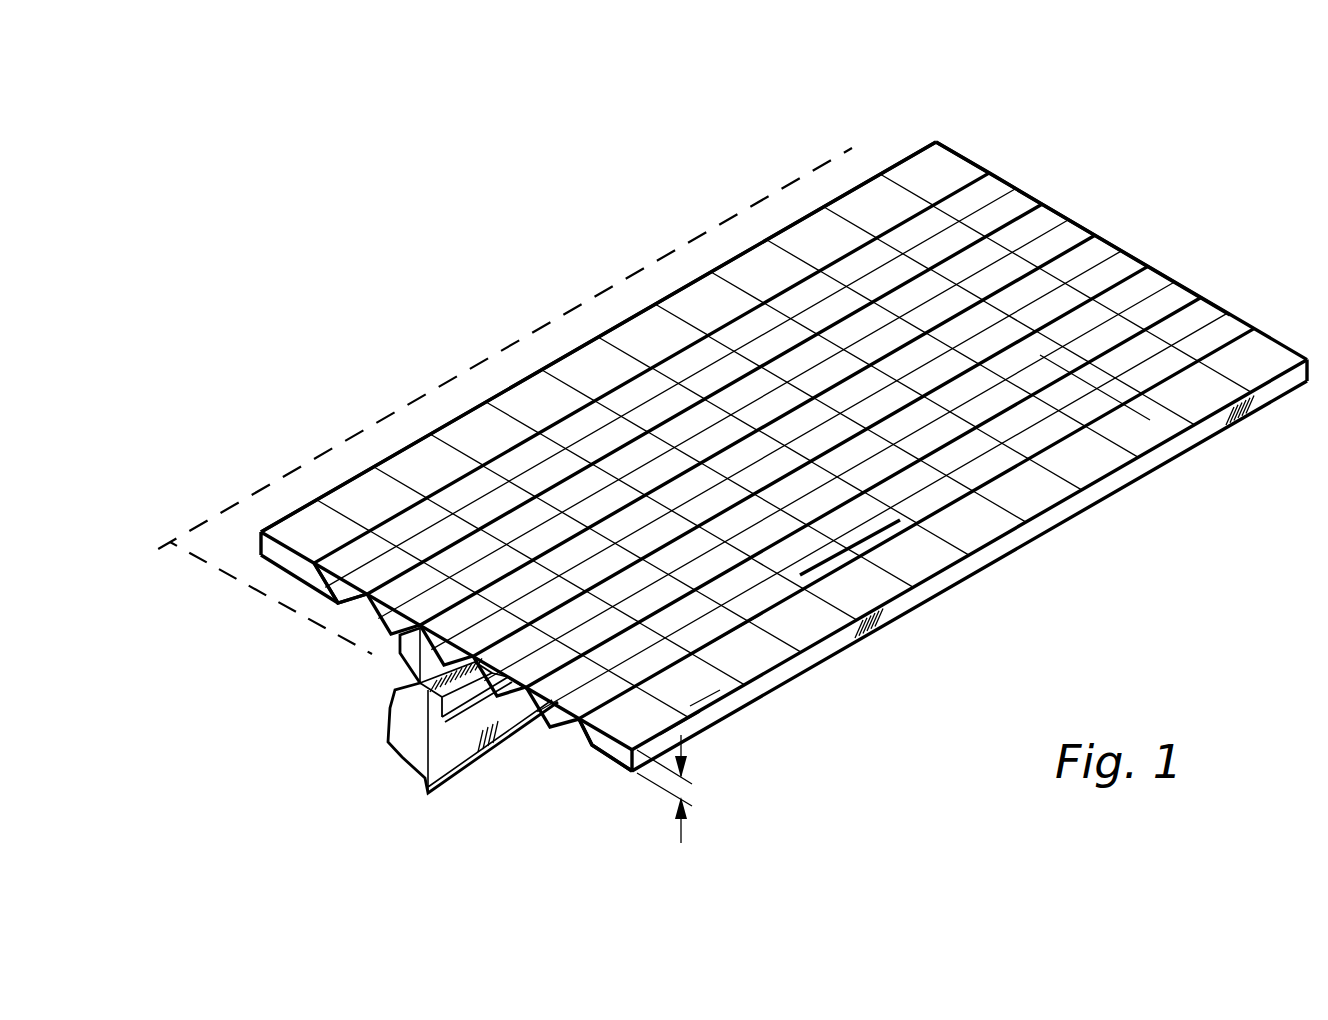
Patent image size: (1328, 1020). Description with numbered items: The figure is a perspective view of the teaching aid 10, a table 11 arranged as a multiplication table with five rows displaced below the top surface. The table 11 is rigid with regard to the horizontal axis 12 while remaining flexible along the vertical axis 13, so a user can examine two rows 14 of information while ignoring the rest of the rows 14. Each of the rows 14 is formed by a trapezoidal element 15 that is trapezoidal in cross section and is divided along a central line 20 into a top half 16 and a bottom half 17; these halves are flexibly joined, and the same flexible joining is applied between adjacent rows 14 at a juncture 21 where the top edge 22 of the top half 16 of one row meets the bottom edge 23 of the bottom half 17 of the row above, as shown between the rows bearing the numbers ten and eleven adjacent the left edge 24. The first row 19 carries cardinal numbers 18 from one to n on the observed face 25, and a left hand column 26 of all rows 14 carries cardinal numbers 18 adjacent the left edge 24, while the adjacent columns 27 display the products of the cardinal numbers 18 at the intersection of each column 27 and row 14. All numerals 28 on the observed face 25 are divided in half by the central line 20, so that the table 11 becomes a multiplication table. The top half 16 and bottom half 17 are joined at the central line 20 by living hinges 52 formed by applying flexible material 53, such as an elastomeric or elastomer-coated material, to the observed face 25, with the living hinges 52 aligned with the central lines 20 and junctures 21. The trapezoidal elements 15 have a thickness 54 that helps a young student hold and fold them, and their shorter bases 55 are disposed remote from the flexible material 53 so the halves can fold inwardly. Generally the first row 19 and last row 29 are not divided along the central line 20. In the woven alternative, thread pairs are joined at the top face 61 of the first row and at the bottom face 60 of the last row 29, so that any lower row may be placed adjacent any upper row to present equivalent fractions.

The teaching aid 10 is at (1232, 146).
The table 11 is at (300, 653).
The horizontal axis 12 is at (640, 272).
The vertical axis 13 is at (167, 537).
The rows 14 is at (1120, 256).
The trapezoidal elements 15 is at (374, 652).
The top half 16 is at (993, 174).
The bottom half 17 is at (1033, 200).
The cardinal numbers 18 is at (728, 770).
The first row 19 is at (268, 580).
The central line 20 is at (1145, 346).
The juncture 21 is at (1187, 297).
The top edge 22 is at (540, 712).
The bottom edge 23 is at (590, 738).
The left edge 24 is at (498, 718).
The observed face 25 is at (855, 548).
The left hand column 26 is at (278, 348).
The adjacent columns 27 is at (325, 323).
The numerals 28 is at (1120, 487).
The last row 29 is at (598, 770).
The living hinges 52 is at (668, 643).
The flexible material 53 is at (700, 700).
The thickness 54 is at (686, 846).
The shorter bases 55 is at (340, 607).
The bottom face 60 is at (673, 726).
The top face 61 is at (398, 450).